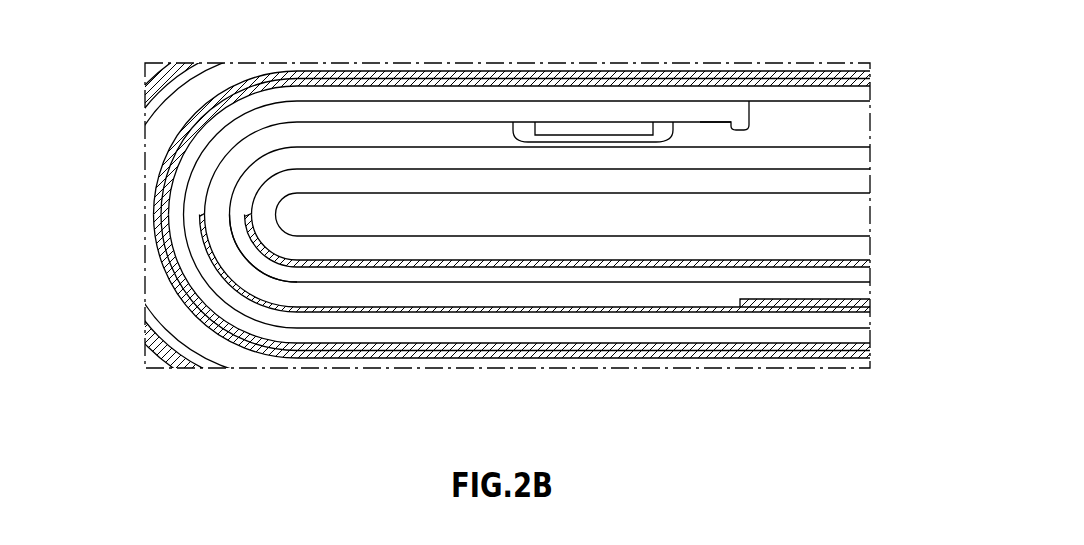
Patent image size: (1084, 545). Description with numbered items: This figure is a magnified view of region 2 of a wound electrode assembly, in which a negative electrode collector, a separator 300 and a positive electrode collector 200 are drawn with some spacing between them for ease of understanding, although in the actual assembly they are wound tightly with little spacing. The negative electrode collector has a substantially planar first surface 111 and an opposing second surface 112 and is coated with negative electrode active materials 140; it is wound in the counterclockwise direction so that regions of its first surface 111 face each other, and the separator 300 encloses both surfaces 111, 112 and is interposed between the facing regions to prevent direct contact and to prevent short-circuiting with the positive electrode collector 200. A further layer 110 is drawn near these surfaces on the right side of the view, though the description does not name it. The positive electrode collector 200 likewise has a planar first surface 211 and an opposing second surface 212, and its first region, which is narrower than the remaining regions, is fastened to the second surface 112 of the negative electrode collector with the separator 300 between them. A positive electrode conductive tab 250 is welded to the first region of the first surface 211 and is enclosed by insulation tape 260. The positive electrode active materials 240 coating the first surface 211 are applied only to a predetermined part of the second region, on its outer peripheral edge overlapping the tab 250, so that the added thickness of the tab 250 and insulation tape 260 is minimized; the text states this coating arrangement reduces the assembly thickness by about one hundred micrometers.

The region 2 is at (535, 62).
The substrate 110 is at (871, 170).
The first surface 111 is at (866, 171).
The second surface 112 is at (851, 168).
The negative electrode active materials 140 is at (845, 260).
The positive electrode collector 200 is at (743, 126).
The first surface 211 is at (756, 116).
The second surface 212 is at (715, 121).
The positive electrode active materials 240 is at (806, 318).
The positive electrode conductive tab 250 is at (643, 138).
The insulation tape 260 is at (583, 129).
The separator 300 is at (851, 147).